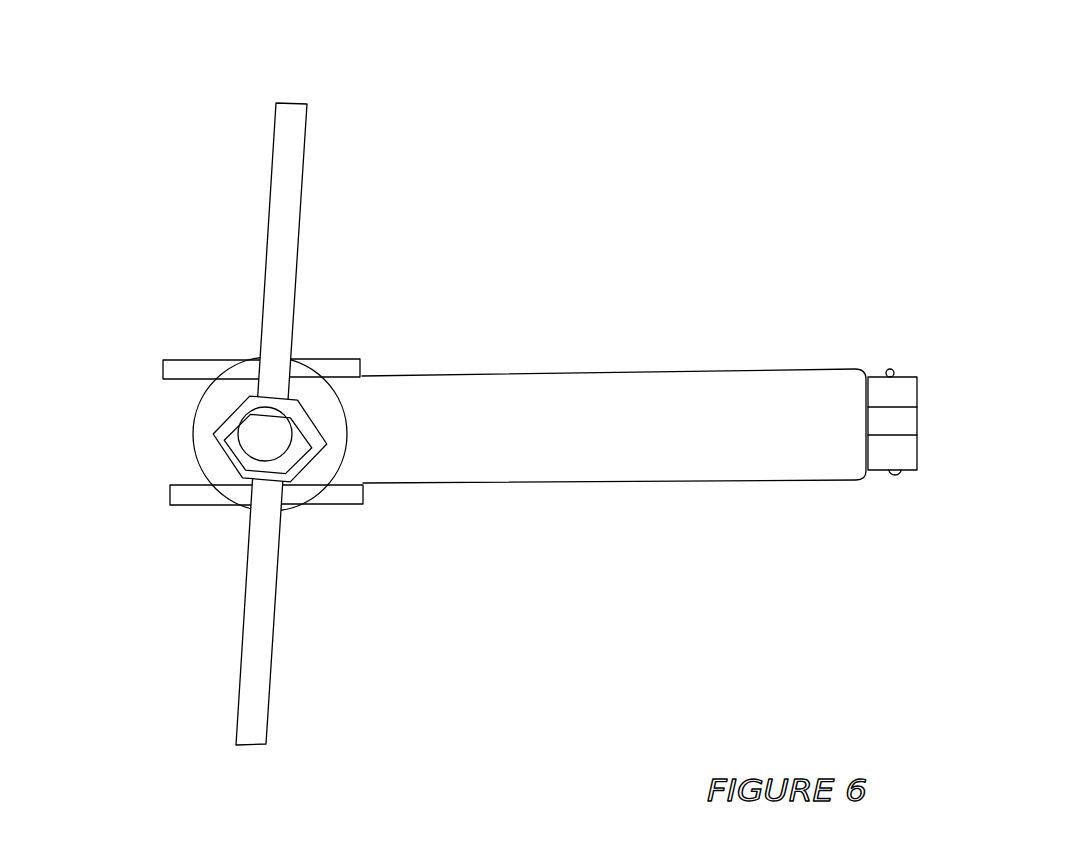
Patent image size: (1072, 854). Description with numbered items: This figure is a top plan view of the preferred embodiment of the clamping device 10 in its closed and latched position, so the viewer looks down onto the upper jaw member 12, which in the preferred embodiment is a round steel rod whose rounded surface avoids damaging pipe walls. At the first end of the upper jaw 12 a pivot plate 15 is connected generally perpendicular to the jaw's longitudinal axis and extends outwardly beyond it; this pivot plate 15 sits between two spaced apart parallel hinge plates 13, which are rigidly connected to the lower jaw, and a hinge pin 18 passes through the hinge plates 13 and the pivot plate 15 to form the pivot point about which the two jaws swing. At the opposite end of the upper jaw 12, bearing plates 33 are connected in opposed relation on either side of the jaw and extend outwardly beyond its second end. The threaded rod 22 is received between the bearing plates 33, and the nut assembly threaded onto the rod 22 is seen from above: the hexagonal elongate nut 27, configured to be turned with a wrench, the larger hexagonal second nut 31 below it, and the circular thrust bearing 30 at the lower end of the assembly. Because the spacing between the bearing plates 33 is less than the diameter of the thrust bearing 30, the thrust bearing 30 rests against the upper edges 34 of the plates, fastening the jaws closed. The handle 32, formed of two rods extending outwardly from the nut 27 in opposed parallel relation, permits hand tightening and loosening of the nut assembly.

The clamping device 10 is at (703, 207).
The upper jaw member 12 is at (743, 458).
The hinge plates 13 is at (907, 388).
The pivot plate 15 is at (902, 422).
The hinge pin 18 is at (892, 372).
The threaded rod 22 is at (268, 438).
The elongate nut 27 is at (213, 418).
The thrust bearing 30 is at (342, 423).
The second nut 31 is at (213, 450).
The handle 32 is at (292, 154).
The bearing plates 33 is at (337, 353).
The upper edges 34 is at (190, 370).